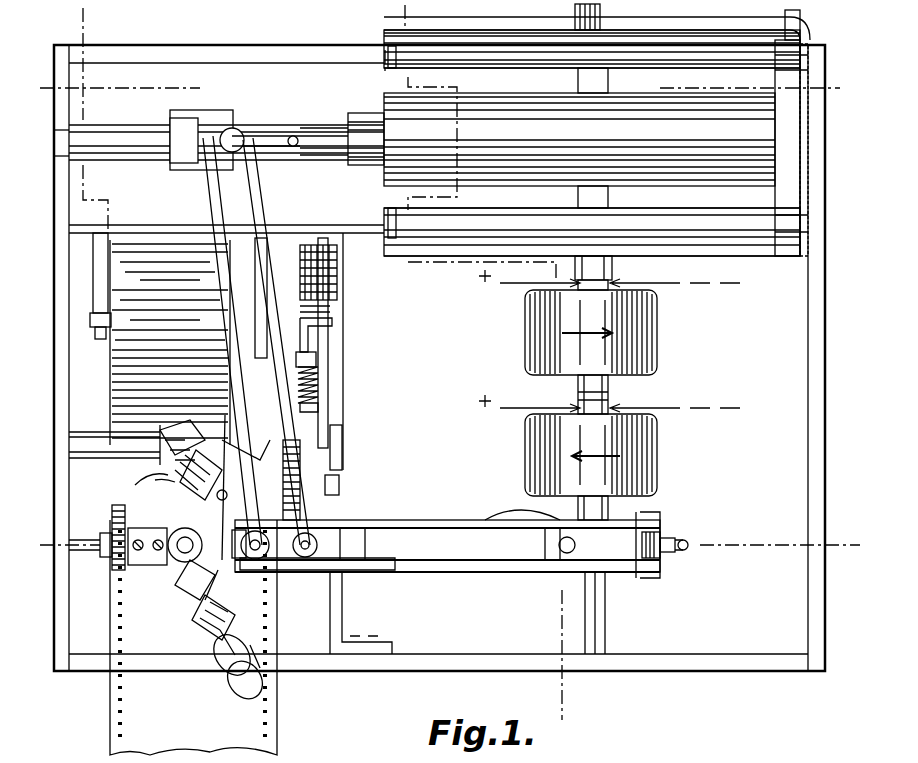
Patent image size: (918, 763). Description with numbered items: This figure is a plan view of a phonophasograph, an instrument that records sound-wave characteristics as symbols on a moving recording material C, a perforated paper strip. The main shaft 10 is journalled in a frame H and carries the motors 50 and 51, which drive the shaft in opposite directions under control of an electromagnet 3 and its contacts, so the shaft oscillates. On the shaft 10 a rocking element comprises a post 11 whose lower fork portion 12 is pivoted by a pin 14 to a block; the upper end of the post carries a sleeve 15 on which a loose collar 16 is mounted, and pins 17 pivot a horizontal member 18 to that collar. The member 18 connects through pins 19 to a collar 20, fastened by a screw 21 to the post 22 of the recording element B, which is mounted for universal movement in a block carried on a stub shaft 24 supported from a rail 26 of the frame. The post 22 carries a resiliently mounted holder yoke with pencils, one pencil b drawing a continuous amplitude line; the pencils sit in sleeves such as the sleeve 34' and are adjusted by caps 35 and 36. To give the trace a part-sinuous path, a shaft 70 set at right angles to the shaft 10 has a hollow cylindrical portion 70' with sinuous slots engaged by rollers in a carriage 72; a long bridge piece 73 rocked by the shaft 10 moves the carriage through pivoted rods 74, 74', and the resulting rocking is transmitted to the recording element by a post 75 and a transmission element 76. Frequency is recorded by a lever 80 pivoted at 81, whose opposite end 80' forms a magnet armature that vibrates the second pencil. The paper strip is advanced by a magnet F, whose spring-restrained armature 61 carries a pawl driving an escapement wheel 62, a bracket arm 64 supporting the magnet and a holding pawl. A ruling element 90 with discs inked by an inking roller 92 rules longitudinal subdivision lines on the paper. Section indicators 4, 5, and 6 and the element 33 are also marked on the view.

The electromagnet 3 is at (55, 28).
The section line 4- 4 is at (417, 25).
The section line 5- 5 is at (54, 533).
The section line 6- 6 is at (48, 105).
The cap 36 is at (232, 385).
The inking roller 92 is at (118, 412).
The post 75 is at (262, 128).
The transmission element 76 is at (205, 192).
The shaft 70 is at (342, 126).
The hollow cylindrical portion 70' is at (579, 139).
The carriage 72 is at (580, 40).
The bridge piece 73 is at (702, 30).
The pivoted rod 74 is at (592, 222).
The rail 74' is at (592, 45).
The motor 51 is at (657, 318).
The motor 50 is at (657, 428).
The shaft 10 is at (610, 400).
The fork portion 12 is at (582, 562).
The pin 14 is at (555, 538).
The horizontal member 18 is at (490, 512).
The pin 17 is at (660, 516).
The loose collar 16 is at (650, 564).
The sleeve 15 is at (668, 540).
The post 11 is at (690, 547).
The rail 26 is at (342, 594).
The frame H is at (426, 664).
The magnet F is at (338, 288).
The bracket arm 64 is at (338, 310).
The armature 61 is at (316, 342).
The lever 80 is at (341, 389).
The escapement wheel 62 is at (296, 498).
The collar 20 is at (317, 562).
The post 22 is at (312, 538).
The pin 19 is at (242, 558).
The pivot 81 is at (230, 492).
The stub shaft 24 is at (104, 557).
The recording element B is at (128, 496).
The pencil b is at (148, 596).
The ruling element 90 is at (160, 462).
The roller 33 is at (195, 506).
The screw 21 is at (196, 580).
The lever end 80' is at (190, 616).
The sleeve 34' is at (173, 612).
The cap 35 is at (238, 688).
The recording material C is at (140, 696).